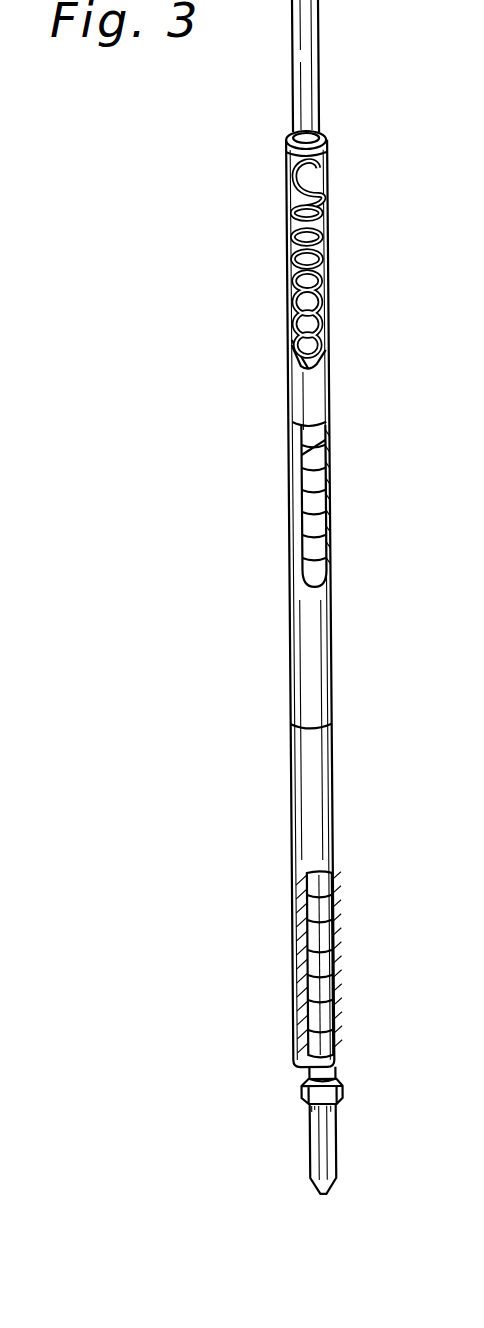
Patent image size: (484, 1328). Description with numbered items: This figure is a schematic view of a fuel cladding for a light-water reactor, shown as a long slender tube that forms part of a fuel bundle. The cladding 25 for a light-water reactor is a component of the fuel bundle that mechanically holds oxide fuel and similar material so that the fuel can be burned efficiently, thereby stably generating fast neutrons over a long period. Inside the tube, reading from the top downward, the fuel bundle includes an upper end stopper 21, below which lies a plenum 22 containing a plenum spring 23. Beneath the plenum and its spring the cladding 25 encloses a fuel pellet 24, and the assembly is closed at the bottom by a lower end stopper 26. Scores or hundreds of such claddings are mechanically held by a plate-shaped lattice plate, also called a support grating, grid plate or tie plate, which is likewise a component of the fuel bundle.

The upper end stopper 21 is at (318, 86).
The plenum 22 is at (329, 190).
The plenum spring 23 is at (330, 264).
The fuel pellet 24 is at (332, 498).
The cladding for a light-water reactor 25 is at (326, 670).
The lower end stopper 26 is at (329, 1140).